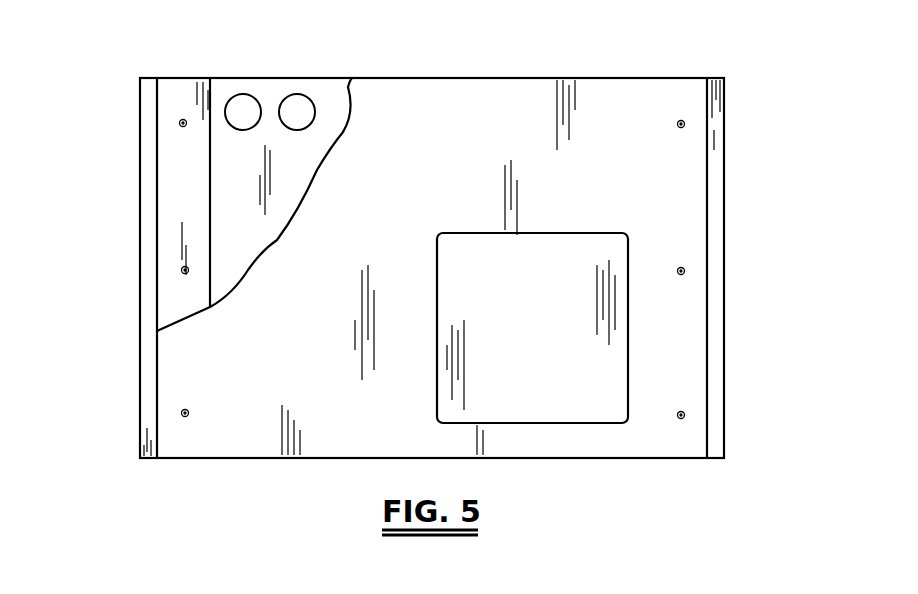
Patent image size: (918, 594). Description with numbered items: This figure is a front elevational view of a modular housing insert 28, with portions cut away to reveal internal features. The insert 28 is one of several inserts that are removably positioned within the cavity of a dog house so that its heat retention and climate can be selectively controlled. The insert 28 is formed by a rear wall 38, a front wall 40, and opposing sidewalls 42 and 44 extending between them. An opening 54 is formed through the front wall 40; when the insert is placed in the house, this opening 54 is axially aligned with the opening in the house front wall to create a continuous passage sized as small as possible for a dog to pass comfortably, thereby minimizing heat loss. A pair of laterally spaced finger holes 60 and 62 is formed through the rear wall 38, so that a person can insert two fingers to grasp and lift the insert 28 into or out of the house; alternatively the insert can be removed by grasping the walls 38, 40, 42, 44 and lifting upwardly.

The modular housing insert 28 is at (748, 58).
The rear wall 38 is at (235, 229).
The front wall 40 is at (682, 207).
The sidewall 42 is at (715, 145).
The sidewall 44 is at (144, 147).
The opening 54 is at (597, 389).
The finger hole 60 is at (232, 88).
The finger hole 62 is at (311, 88).